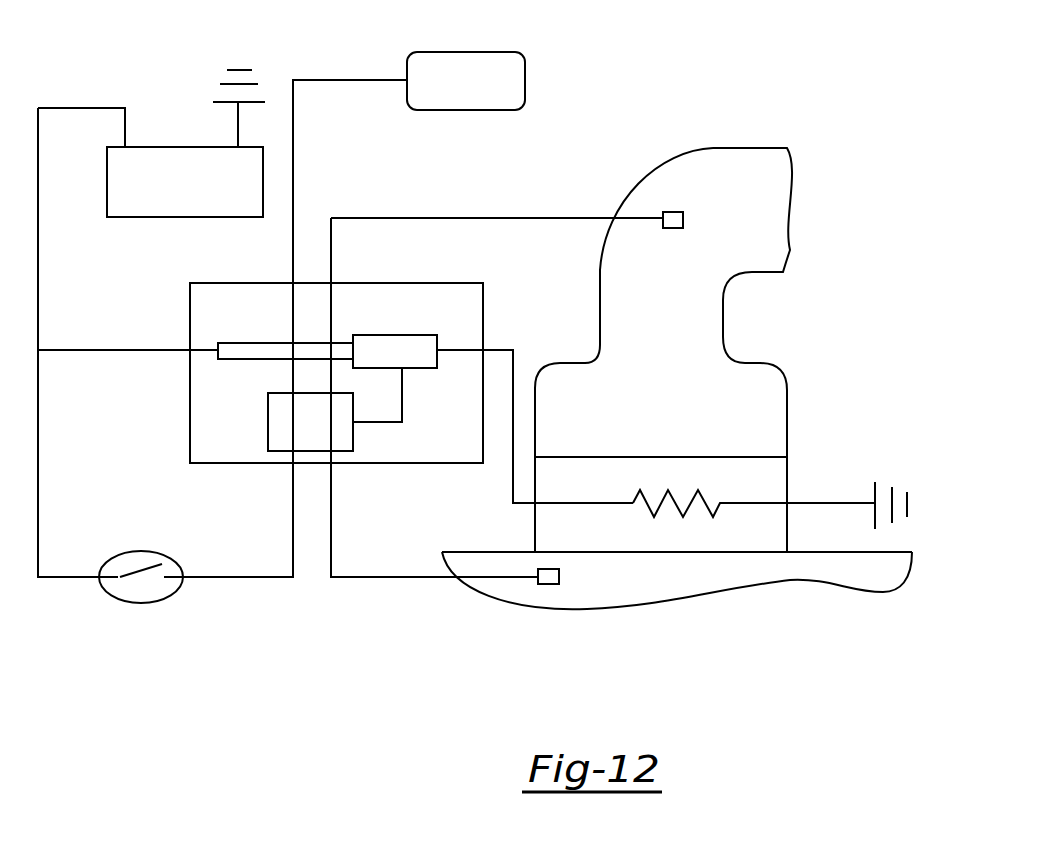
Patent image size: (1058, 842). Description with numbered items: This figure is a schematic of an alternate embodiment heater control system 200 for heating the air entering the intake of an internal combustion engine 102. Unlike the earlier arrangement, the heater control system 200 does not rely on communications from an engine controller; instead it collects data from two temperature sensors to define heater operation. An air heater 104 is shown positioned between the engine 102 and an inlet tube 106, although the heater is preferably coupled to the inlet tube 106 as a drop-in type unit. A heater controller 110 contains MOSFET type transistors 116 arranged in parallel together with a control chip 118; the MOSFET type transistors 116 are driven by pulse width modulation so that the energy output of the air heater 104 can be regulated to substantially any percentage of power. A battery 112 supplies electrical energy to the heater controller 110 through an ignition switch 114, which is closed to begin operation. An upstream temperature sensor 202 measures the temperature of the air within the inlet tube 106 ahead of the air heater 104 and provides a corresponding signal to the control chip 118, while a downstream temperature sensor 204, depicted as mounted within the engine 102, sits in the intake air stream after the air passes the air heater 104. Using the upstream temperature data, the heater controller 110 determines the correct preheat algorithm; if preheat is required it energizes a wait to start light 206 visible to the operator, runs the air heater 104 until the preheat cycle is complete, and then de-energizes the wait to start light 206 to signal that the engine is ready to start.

The internal combustion engine 102 is at (832, 573).
The air heater 104 is at (770, 470).
The inlet tube 106 is at (750, 418).
The heater controller 110 is at (350, 283).
The battery 112 is at (133, 217).
The ignition switch 114 is at (140, 551).
The MOSFET type transistors 116 is at (428, 368).
The control chip 118 is at (353, 442).
The heater control system 200 is at (586, 120).
The upstream temperature sensor 202 is at (673, 212).
The downstream temperature sensor 204 is at (550, 584).
The wait to start light 206 is at (478, 52).